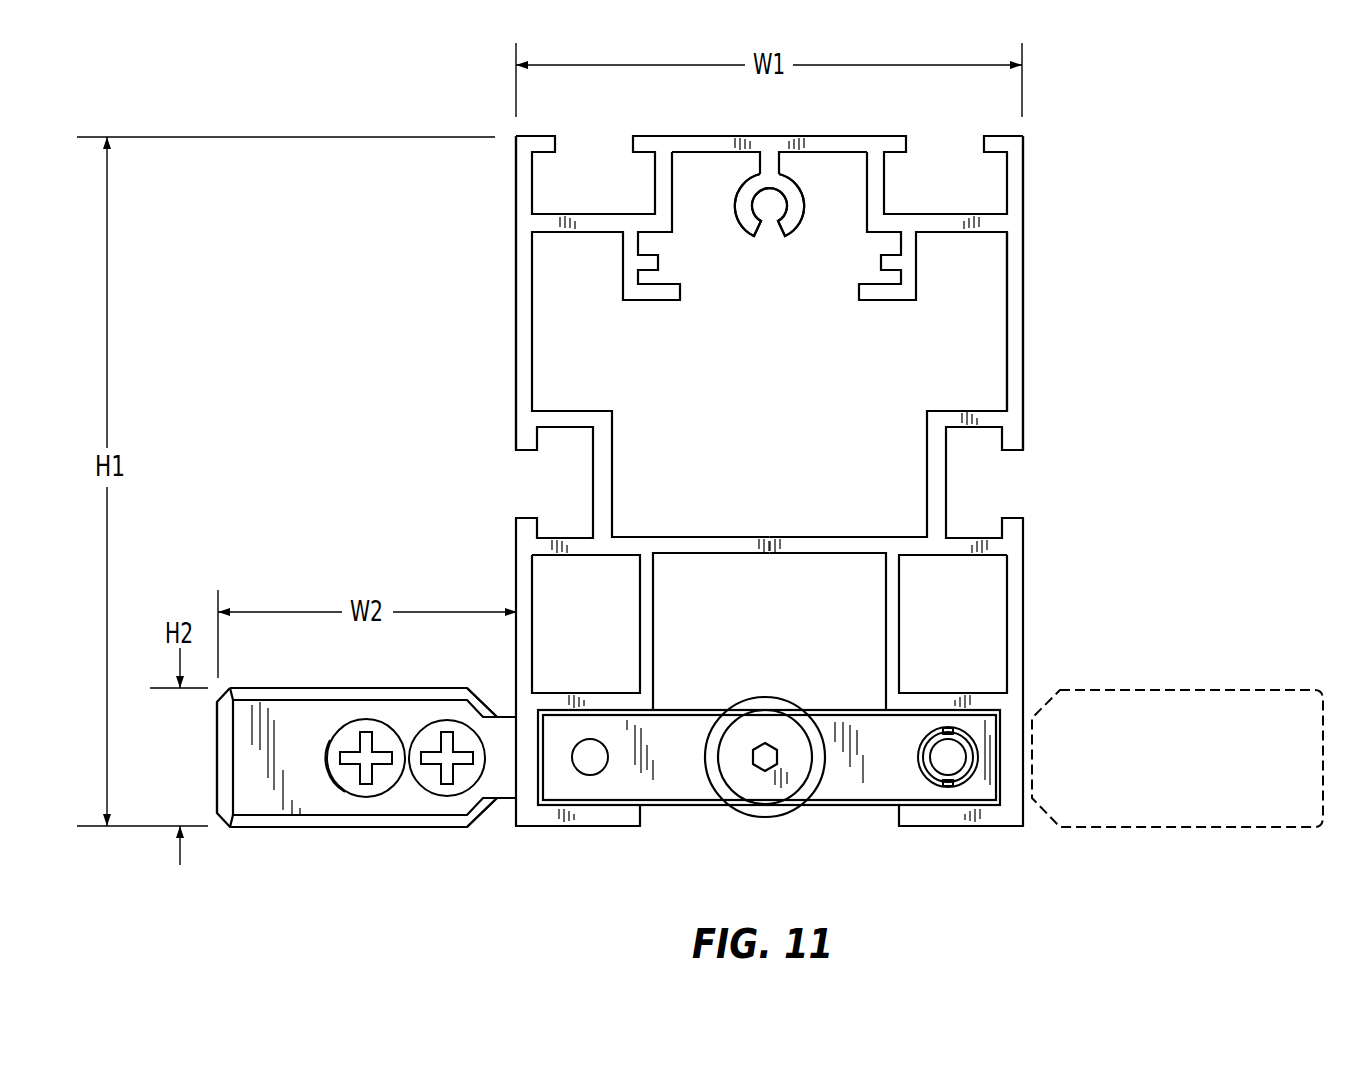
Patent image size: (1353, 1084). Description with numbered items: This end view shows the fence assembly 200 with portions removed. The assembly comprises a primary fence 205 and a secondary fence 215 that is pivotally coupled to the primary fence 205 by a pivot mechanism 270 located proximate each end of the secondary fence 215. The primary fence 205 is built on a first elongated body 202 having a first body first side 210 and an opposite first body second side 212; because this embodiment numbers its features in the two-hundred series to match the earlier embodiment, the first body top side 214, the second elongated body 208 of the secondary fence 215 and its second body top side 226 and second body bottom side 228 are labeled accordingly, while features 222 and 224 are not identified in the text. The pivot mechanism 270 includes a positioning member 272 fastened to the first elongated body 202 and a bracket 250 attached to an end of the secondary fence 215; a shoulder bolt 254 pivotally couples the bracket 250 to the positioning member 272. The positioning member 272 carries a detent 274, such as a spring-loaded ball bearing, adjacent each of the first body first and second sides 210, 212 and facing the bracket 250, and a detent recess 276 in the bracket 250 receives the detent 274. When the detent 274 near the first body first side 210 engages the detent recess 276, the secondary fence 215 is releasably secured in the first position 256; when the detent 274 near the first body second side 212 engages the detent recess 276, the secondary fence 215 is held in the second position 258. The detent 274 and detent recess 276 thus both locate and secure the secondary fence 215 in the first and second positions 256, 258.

The fence assembly 200 is at (403, 100).
The first elongated body 202 is at (1025, 195).
The primary fence 205 is at (1048, 270).
The first body first side 210 is at (514, 292).
The first body second side 212 is at (1025, 322).
The top wall 214 is at (790, 135).
The secondary fence 215 is at (300, 592).
The bracket body 208 is at (310, 788).
The first end of bracket 222 is at (217, 742).
The second end of bracket 224 is at (487, 807).
The top surface of bracket 226 is at (342, 688).
The fasteners 228 is at (388, 827).
The first position 256 is at (272, 835).
The bracket 250 is at (670, 770).
The shoulder bolt 254 is at (755, 780).
The pivot mechanism 270 is at (800, 837).
The positioning member 272 is at (883, 770).
The detent 274 is at (953, 767).
The detent recess 276 is at (597, 768).
The second position 258 is at (1188, 842).